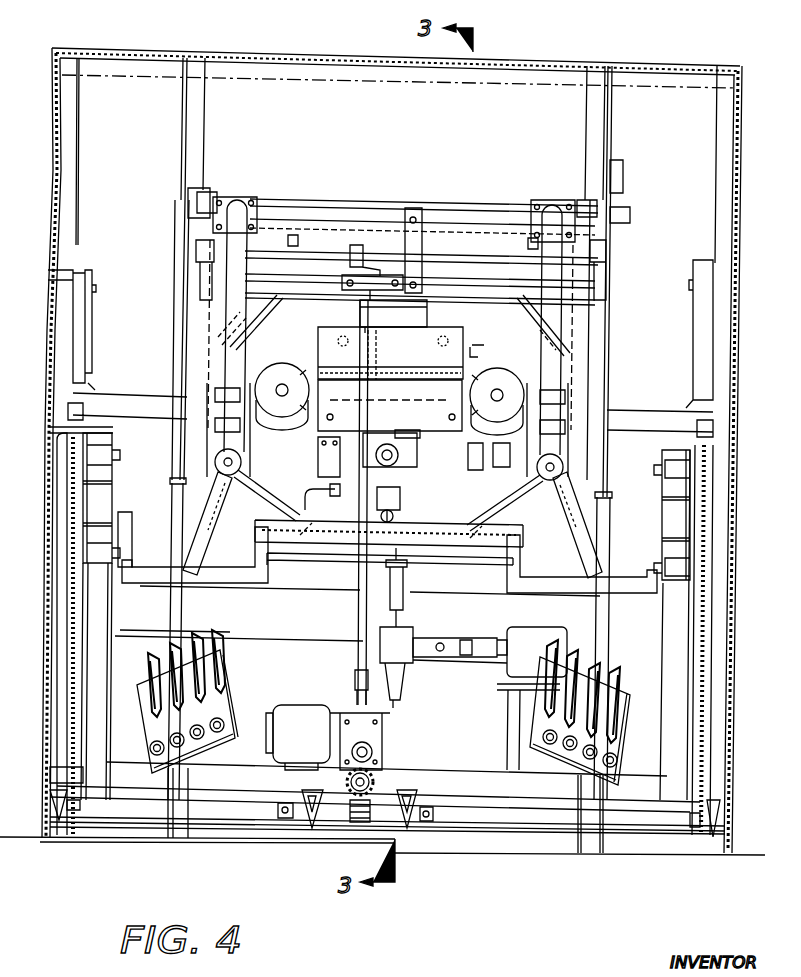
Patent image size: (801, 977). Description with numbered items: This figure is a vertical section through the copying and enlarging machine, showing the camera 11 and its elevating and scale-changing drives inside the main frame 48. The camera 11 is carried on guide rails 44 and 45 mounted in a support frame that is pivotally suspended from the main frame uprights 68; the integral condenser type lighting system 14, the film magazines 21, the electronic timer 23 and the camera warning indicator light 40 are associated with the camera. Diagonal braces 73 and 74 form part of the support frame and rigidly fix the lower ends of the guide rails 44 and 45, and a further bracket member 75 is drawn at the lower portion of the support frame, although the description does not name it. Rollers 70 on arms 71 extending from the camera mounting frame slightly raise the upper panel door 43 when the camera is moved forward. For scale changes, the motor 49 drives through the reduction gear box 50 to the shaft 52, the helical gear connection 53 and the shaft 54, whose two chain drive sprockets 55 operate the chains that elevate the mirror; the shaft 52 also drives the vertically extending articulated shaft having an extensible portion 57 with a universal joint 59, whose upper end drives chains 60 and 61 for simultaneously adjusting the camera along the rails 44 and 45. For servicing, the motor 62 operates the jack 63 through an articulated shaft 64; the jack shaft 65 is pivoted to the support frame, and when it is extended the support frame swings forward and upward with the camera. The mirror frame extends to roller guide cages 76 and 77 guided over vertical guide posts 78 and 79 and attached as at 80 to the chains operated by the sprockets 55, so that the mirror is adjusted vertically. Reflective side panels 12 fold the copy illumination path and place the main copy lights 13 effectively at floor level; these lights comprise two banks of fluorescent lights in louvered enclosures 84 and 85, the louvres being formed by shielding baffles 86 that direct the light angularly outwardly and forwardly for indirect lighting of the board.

The upper panel door 43 is at (300, 50).
The main frame uprights 68 is at (198, 118).
The rollers 70 is at (290, 242).
The universal joint 59 is at (296, 256).
The chain 60 is at (198, 283).
The chain 61 is at (590, 296).
The arms 71 is at (211, 312).
The guide rail 44 is at (252, 341).
The guide rail 45 is at (515, 343).
The condenser type lighting system 14 is at (417, 321).
The camera warning indicator light 40 is at (456, 362).
The magazines 21 is at (296, 352).
The camera 11 is at (414, 428).
The roller guide cage 76 is at (120, 468).
The roller guide cage 77 is at (660, 484).
The attachment 80 is at (62, 497).
The diagonal brace 73 is at (270, 484).
The electronic timer 23 is at (399, 496).
The diagonal brace 74 is at (213, 508).
The angle brackets 75 is at (268, 574).
The extensible portion of articulated shaft 57 is at (360, 587).
The jack shaft 65 is at (403, 589).
The jack 63 is at (403, 637).
The articulated shaft 64 is at (457, 643).
The motor 62 is at (530, 628).
The reflective side panels 12 is at (82, 604).
The vertical guide post 78 is at (100, 646).
The shielding baffles 86 is at (200, 641).
The louvered enclosure 84 is at (230, 684).
The louvered enclosure 85 is at (500, 688).
The vertical guide post 79 is at (672, 684).
The motor 49 is at (285, 708).
The reduction gear box 50 is at (340, 712).
The chain drive sprockets 55 is at (78, 793).
The main copy lights 13 is at (148, 741).
The main frame 48 is at (93, 822).
The shaft 52 is at (355, 790).
The helical gear connection 53 is at (360, 817).
The shaft 54 is at (485, 818).